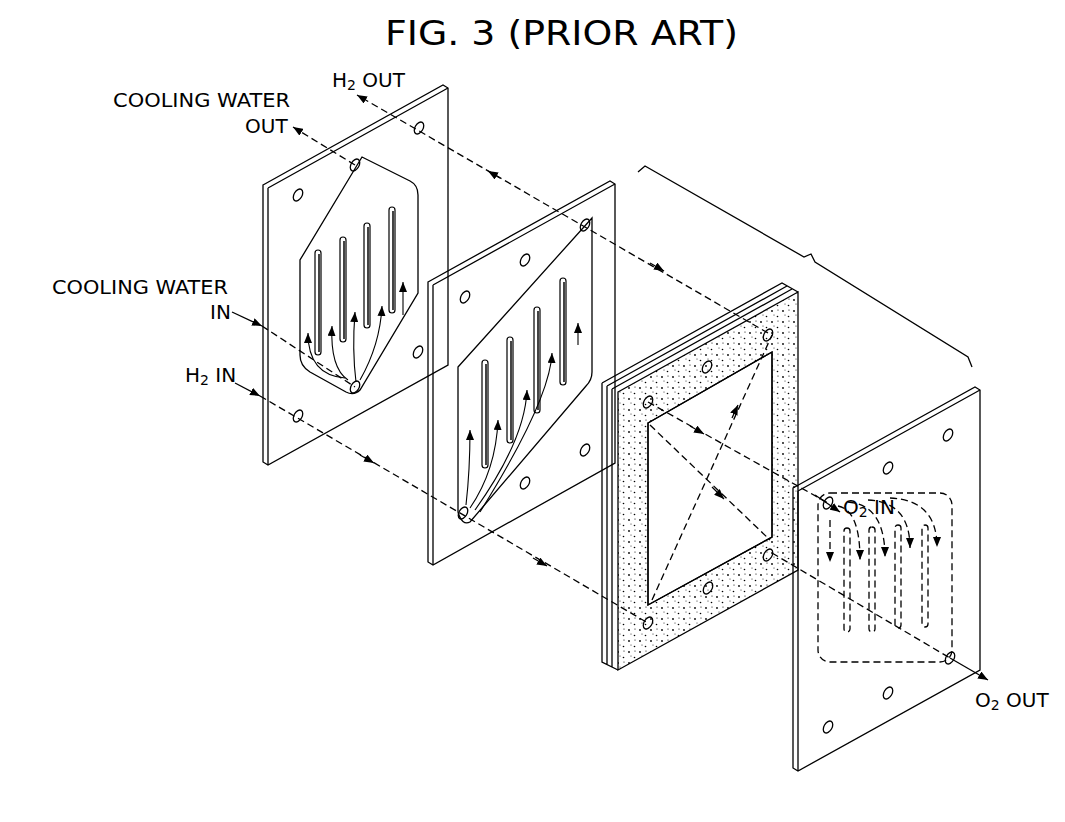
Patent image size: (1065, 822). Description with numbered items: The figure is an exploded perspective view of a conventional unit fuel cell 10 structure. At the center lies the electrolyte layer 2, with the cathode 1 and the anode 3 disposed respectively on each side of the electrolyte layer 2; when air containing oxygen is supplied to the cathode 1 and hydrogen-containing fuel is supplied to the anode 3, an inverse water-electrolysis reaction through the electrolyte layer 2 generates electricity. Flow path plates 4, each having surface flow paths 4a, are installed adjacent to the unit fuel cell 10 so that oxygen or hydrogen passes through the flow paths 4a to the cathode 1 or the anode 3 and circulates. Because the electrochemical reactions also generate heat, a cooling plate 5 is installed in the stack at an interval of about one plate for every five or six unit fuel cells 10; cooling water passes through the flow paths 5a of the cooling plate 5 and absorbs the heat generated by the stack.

The cathode 1 is at (720, 547).
The electrolyte layer 2 is at (607, 662).
The anode 3 is at (600, 570).
The flow path plate 4 is at (432, 562).
The flow path 4a is at (480, 485).
The cooling plate 5 is at (262, 468).
The flow path 5a is at (302, 270).
The unit fuel cell 10 is at (805, 266).